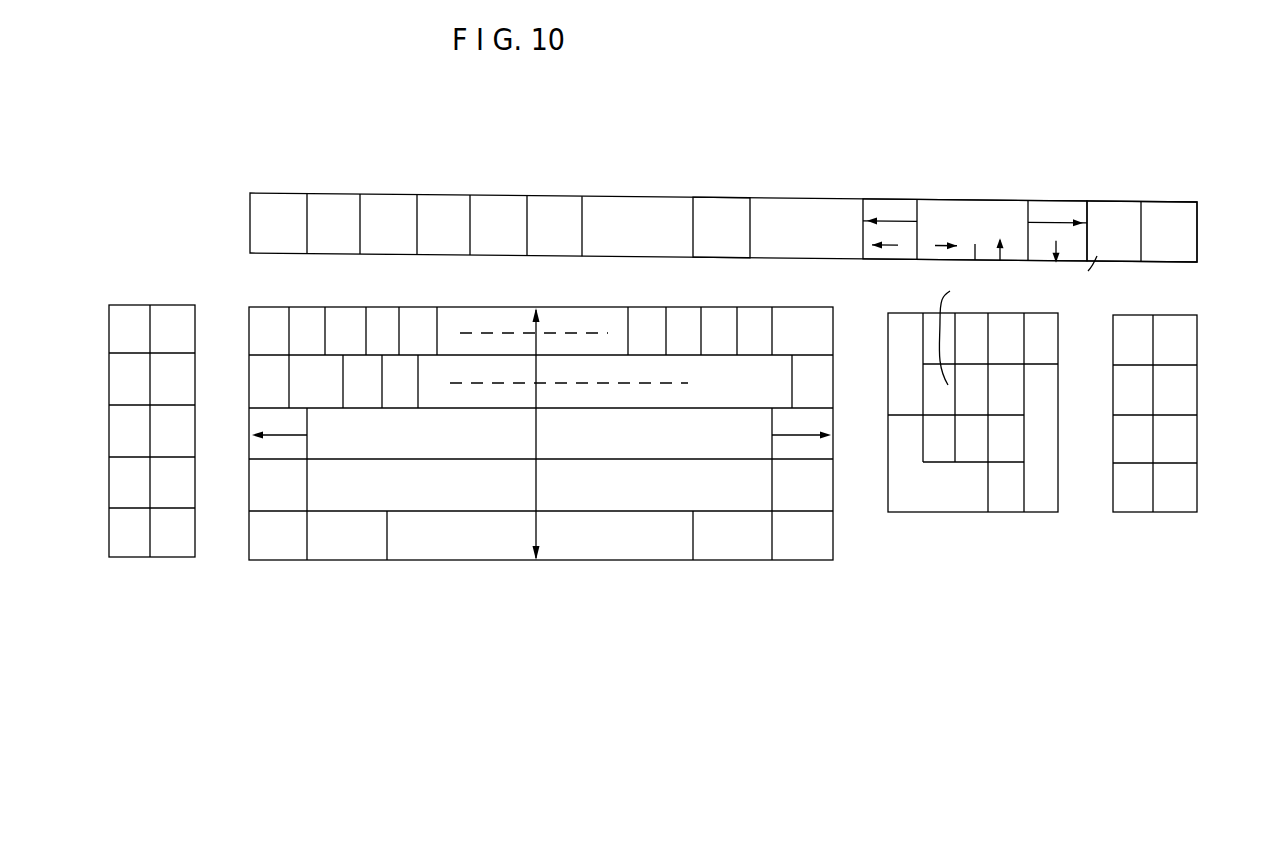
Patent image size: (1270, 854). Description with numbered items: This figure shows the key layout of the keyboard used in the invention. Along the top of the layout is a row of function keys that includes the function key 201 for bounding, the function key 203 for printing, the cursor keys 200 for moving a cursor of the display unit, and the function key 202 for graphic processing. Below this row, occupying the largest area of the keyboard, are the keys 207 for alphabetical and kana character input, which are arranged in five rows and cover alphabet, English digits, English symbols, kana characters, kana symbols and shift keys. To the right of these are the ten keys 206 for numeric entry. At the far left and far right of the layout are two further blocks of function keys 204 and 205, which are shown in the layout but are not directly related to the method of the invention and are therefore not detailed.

The cursor keys 200 is at (975, 211).
The function key for bounding 201 is at (723, 229).
The function key for graphic processing 202 is at (1142, 236).
The function key for printing 203 is at (737, 207).
The function keys 204 is at (163, 305).
The function keys 205 is at (1128, 512).
The ten keys 206 is at (945, 512).
The keys for alphabetical and kana character input 207 is at (387, 307).